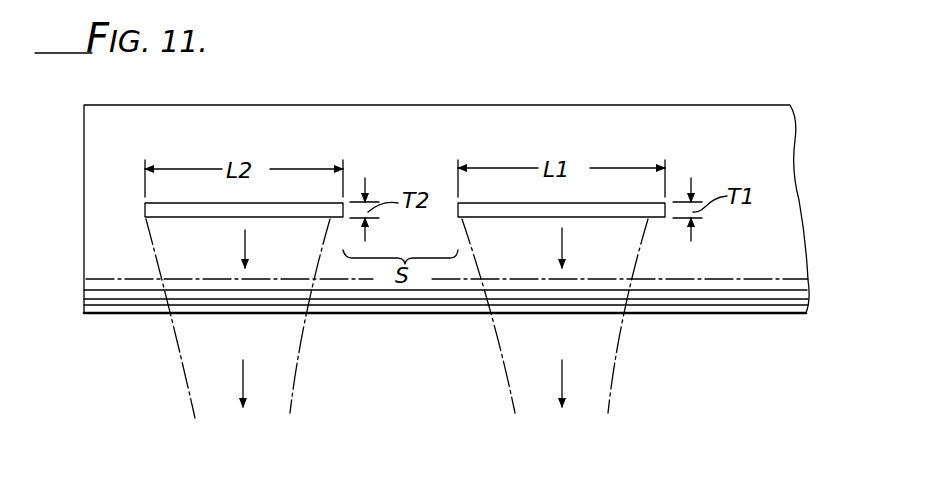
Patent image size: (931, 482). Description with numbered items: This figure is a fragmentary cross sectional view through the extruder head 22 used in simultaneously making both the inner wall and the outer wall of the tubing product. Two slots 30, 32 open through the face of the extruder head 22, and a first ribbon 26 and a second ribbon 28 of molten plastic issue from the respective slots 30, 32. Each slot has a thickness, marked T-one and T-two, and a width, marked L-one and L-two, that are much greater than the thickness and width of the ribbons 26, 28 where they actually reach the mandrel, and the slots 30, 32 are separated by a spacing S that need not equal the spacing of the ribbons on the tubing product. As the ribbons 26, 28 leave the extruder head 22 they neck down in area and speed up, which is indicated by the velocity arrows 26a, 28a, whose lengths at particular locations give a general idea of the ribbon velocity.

The extruder head 22 is at (592, 105).
The first ribbon 26 is at (620, 345).
The velocity arrow 26a is at (564, 242).
The second ribbon 28 is at (302, 348).
The velocity arrow 28a is at (247, 244).
The slot 30 is at (497, 217).
The slot 32 is at (180, 218).